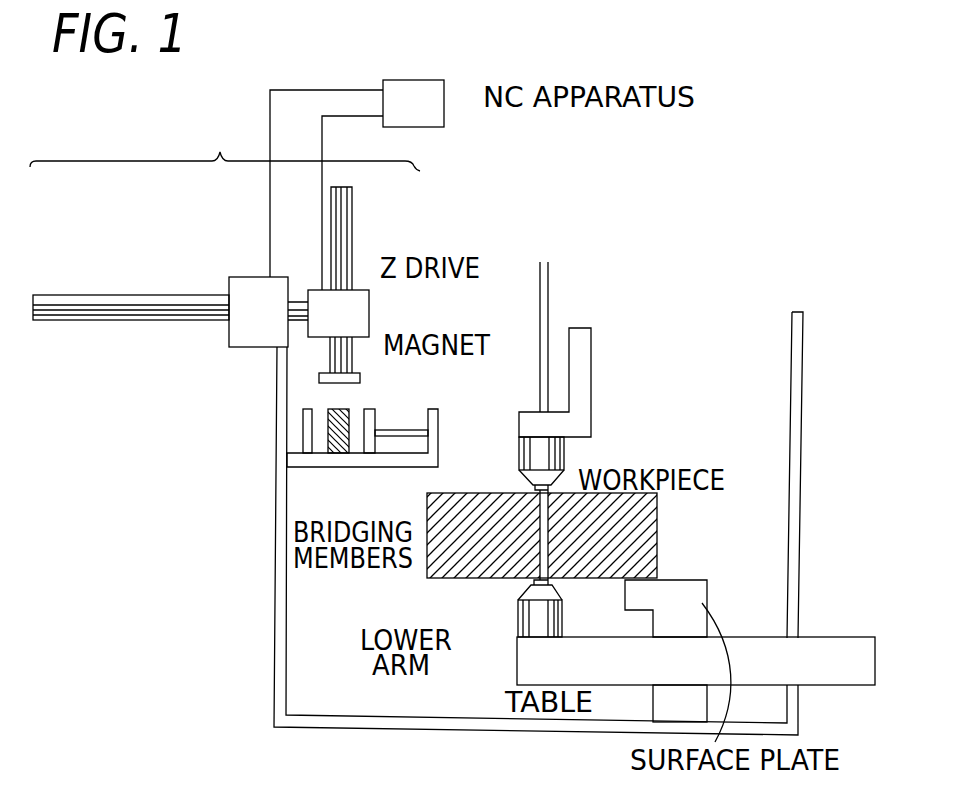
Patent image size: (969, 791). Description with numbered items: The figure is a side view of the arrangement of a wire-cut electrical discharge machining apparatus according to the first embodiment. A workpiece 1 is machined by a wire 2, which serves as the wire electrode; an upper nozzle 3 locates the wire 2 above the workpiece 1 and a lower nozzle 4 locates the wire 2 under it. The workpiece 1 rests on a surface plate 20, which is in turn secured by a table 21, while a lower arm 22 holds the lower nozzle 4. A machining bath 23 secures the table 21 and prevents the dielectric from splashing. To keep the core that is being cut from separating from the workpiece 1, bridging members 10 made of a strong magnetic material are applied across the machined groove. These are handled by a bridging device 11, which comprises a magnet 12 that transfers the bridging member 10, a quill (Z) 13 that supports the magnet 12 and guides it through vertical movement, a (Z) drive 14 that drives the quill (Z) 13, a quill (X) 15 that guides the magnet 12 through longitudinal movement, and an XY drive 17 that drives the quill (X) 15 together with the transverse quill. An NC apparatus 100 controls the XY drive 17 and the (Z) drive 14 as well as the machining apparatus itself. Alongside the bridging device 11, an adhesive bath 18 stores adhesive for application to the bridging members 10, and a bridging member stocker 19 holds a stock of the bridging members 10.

The workpiece 1 is at (657, 517).
The wire 2 is at (548, 295).
The upper nozzle 3 is at (550, 452).
The lower nozzle 4 is at (530, 615).
The bridging member 10 is at (338, 453).
The bridging device 11 is at (225, 168).
The magnet 12 is at (360, 378).
The quill (Z) 13 is at (342, 236).
The (Z) drive 14 is at (358, 310).
The quill (X) 15 is at (140, 297).
The XY drive 17 is at (250, 285).
The adhesive bath 18 is at (437, 420).
The bridging member stocker 19 is at (303, 422).
The surface plate 20 is at (693, 595).
The table 21 is at (668, 700).
The lower arm 22 is at (535, 655).
The machining bath 23 is at (792, 522).
The NC apparatus 100 is at (444, 104).